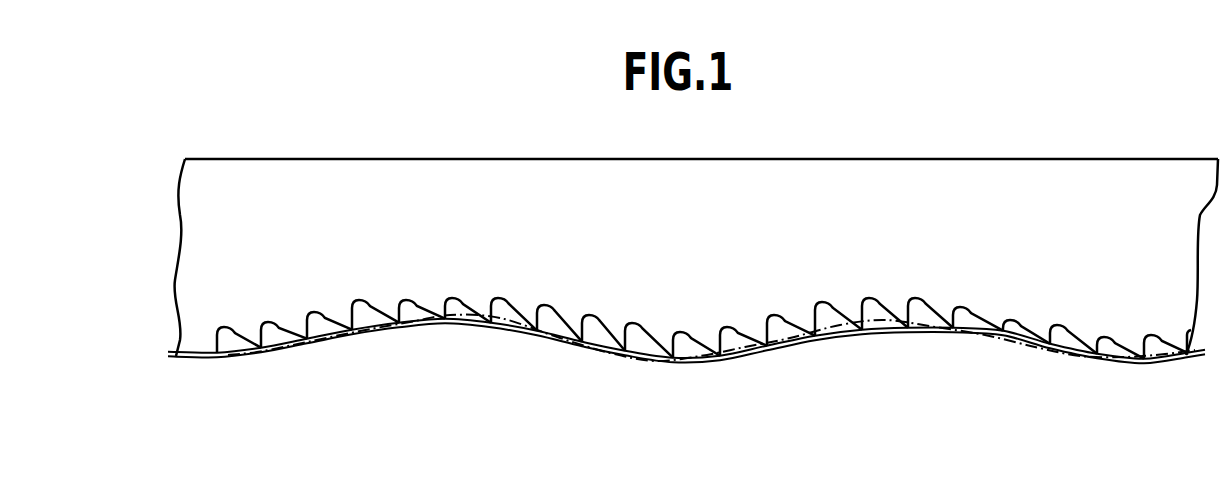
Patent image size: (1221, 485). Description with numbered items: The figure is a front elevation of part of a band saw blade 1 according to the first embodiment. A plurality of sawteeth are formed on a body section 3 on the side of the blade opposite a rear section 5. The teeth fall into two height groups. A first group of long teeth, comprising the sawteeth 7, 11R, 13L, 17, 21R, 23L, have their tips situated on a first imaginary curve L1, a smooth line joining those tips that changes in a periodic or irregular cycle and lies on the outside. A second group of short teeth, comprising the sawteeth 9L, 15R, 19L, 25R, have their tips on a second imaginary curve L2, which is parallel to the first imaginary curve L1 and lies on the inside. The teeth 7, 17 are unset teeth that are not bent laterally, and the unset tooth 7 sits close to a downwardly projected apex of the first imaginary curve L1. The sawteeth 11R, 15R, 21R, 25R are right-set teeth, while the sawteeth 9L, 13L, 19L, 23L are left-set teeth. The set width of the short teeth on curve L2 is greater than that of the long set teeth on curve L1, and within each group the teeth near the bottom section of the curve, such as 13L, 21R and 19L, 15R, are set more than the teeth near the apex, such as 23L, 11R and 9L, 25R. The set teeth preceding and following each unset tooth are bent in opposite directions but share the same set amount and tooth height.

The saw blade 1 is at (696, 225).
The body section 3 is at (692, 249).
The rear section 5 is at (1006, 158).
The unset tooth 7 is at (217, 359).
The left-set sawtooth 9L is at (261, 354).
The right-set sawtooth 11R is at (307, 345).
The left-set sawtooth 13L is at (352, 336).
The right-set sawtooth 15R is at (399, 329).
The unset tooth 17 is at (445, 325).
The left-set sawtooth 19L is at (491, 329).
The right-set sawtooth 21R is at (537, 337).
The left-set sawtooth 23L is at (582, 348).
The right-set sawtooth 25R is at (625, 357).
The first imaginary curve L1 is at (200, 357).
The second imaginary curve L2 is at (214, 352).